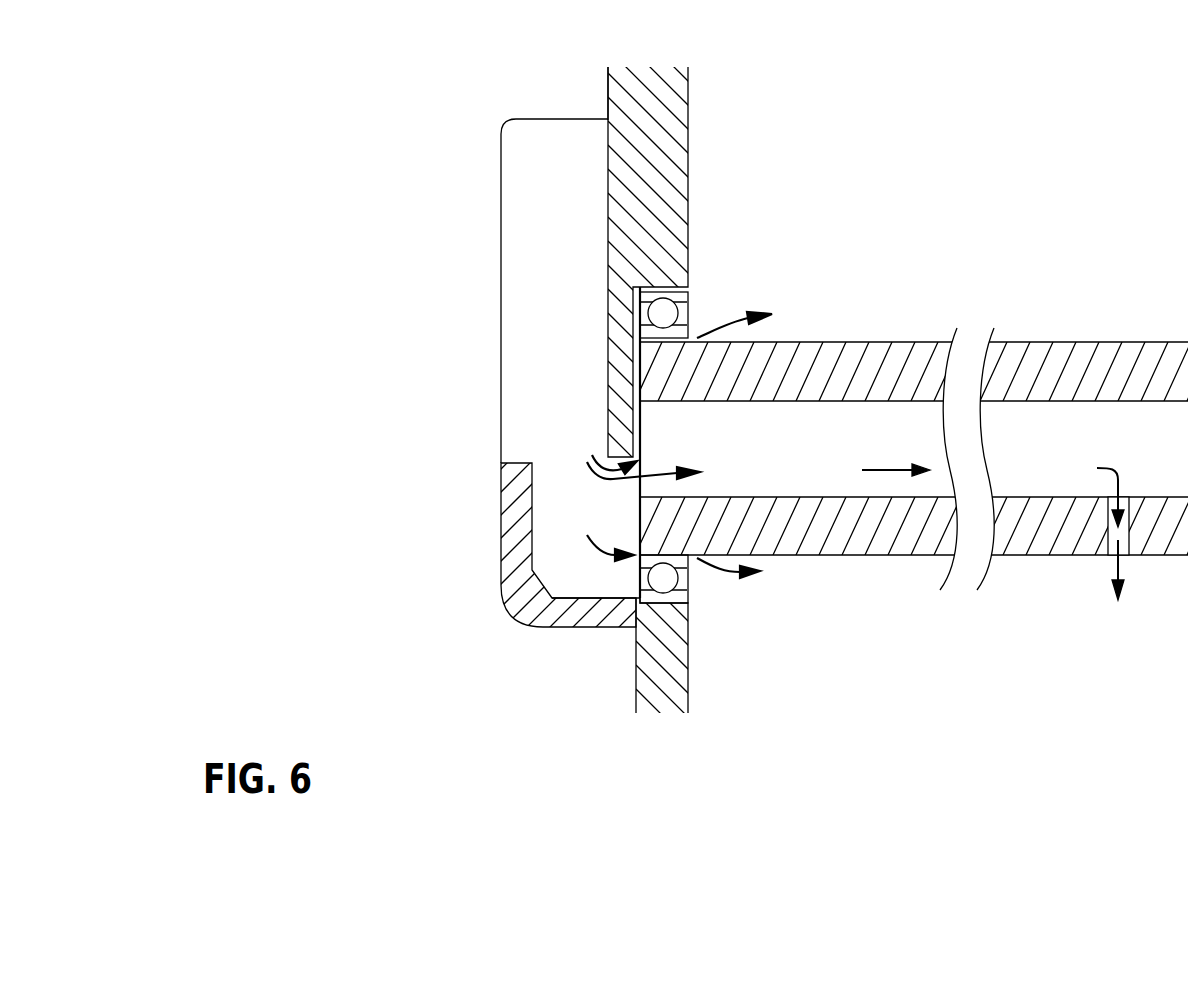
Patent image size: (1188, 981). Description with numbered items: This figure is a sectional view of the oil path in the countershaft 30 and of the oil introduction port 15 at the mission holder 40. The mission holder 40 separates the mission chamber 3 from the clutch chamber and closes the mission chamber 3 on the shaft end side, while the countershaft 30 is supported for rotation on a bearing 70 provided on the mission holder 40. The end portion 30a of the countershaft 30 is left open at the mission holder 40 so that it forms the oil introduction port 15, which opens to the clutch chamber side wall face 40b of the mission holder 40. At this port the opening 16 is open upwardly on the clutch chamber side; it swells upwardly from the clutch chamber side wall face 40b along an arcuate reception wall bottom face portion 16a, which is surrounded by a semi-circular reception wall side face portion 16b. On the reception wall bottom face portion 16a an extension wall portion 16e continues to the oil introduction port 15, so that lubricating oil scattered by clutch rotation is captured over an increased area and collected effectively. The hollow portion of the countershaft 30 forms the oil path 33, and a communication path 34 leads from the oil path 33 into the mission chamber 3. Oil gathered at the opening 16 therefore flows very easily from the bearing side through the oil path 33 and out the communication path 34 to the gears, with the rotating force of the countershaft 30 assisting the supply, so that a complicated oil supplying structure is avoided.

The mission chamber 3 is at (935, 650).
The oil introduction port 15 is at (533, 513).
The opening 16 is at (572, 460).
The reception wall bottom face portion 16a is at (572, 596).
The reception wall side face portion 16b is at (500, 493).
The extension wall portion 16e is at (530, 268).
The countershaft 30 is at (830, 342).
The end portion 30a is at (630, 502).
The oil path 33 is at (1043, 422).
The communication path 34 is at (1100, 533).
The mission holder 40 is at (667, 130).
The clutch chamber side wall face 40b is at (608, 88).
The bearing 70 is at (687, 297).